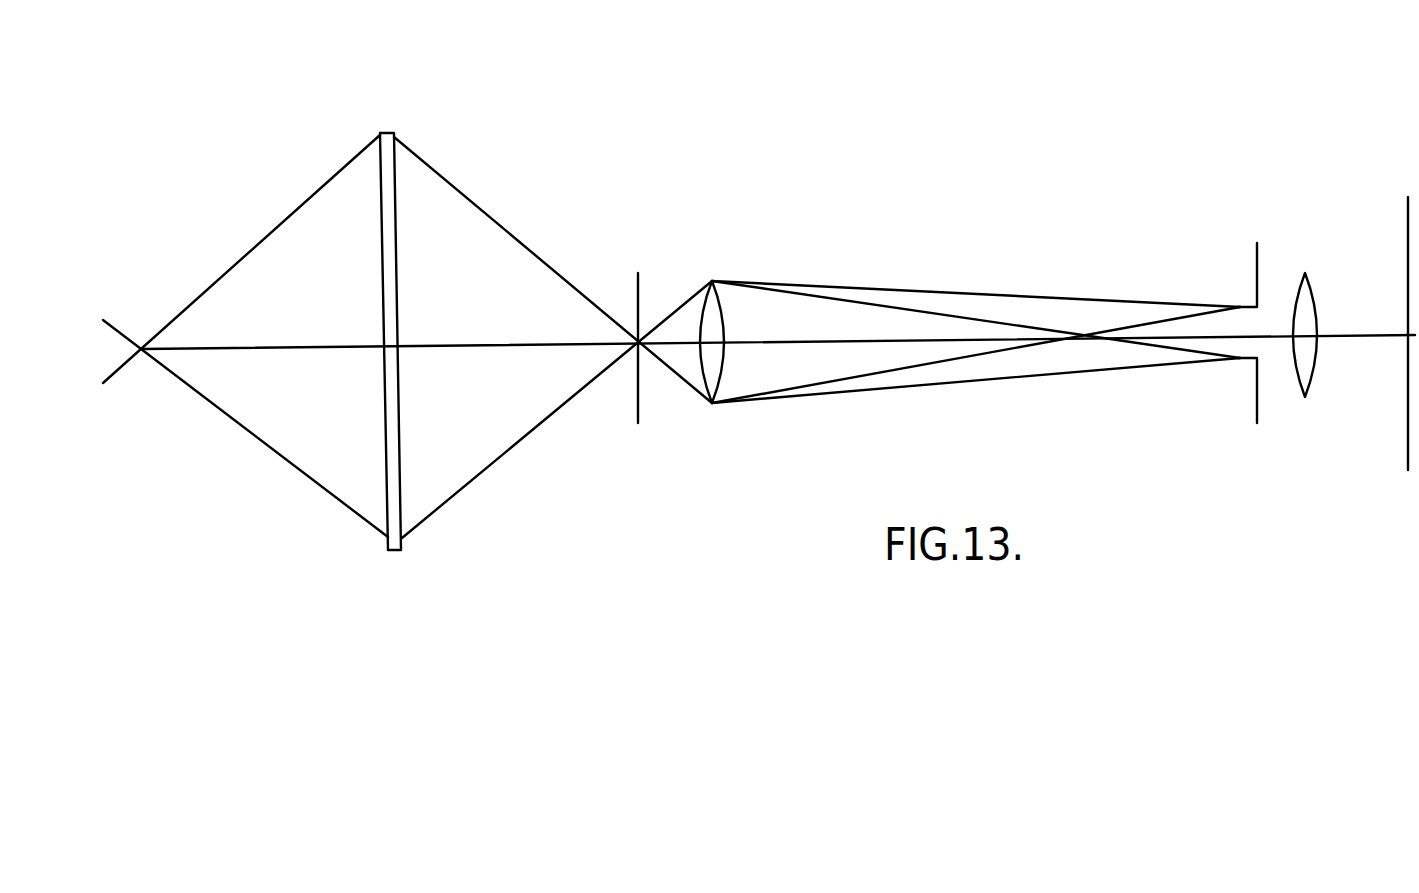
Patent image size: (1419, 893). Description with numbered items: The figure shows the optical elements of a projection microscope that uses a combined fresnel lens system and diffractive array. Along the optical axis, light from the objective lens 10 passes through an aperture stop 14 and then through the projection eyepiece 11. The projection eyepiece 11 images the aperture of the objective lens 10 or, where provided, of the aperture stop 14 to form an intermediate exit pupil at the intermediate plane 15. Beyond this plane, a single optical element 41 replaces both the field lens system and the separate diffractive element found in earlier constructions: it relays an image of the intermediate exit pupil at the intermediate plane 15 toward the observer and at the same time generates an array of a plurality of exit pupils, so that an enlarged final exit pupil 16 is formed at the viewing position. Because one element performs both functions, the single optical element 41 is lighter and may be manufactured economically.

The objective lens 10 is at (1313, 293).
The projection eyepiece 11 is at (715, 407).
The aperture stop 14 is at (1255, 258).
The intermediate plane 15 is at (637, 268).
The final exit pupil 16 is at (143, 347).
The single optical element 41 is at (385, 128).